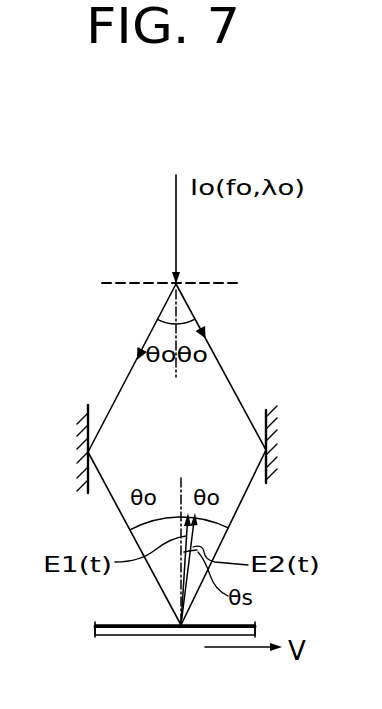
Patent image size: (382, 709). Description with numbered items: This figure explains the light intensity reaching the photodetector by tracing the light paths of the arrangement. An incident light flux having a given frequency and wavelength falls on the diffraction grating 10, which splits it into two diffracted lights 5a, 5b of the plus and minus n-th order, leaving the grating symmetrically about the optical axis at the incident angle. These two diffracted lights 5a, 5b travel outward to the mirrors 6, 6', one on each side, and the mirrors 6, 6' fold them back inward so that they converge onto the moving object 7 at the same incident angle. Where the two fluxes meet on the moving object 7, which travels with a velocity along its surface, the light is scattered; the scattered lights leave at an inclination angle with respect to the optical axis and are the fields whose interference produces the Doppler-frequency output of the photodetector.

The diffraction grating 10 is at (243, 283).
The diffracted light 5a is at (138, 352).
The diffracted light 5b is at (209, 337).
The mirror 6 is at (55, 449).
The mirror 6' is at (303, 444).
The moving object 7 is at (120, 633).